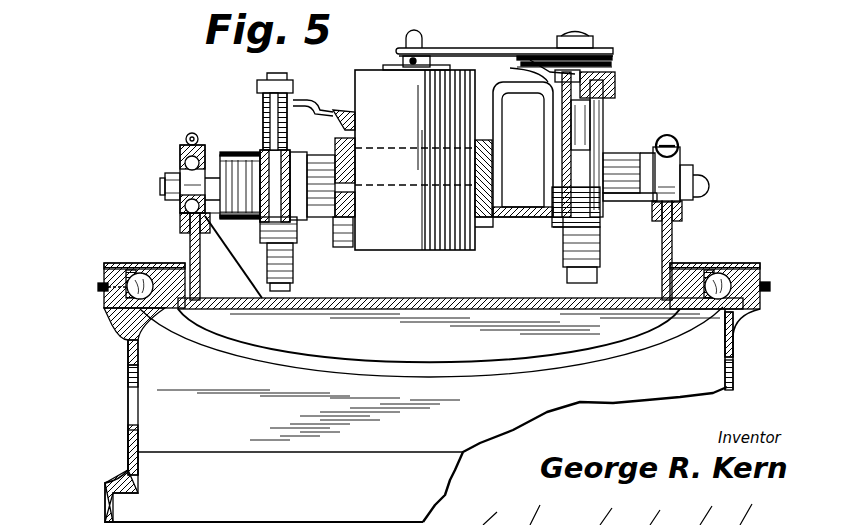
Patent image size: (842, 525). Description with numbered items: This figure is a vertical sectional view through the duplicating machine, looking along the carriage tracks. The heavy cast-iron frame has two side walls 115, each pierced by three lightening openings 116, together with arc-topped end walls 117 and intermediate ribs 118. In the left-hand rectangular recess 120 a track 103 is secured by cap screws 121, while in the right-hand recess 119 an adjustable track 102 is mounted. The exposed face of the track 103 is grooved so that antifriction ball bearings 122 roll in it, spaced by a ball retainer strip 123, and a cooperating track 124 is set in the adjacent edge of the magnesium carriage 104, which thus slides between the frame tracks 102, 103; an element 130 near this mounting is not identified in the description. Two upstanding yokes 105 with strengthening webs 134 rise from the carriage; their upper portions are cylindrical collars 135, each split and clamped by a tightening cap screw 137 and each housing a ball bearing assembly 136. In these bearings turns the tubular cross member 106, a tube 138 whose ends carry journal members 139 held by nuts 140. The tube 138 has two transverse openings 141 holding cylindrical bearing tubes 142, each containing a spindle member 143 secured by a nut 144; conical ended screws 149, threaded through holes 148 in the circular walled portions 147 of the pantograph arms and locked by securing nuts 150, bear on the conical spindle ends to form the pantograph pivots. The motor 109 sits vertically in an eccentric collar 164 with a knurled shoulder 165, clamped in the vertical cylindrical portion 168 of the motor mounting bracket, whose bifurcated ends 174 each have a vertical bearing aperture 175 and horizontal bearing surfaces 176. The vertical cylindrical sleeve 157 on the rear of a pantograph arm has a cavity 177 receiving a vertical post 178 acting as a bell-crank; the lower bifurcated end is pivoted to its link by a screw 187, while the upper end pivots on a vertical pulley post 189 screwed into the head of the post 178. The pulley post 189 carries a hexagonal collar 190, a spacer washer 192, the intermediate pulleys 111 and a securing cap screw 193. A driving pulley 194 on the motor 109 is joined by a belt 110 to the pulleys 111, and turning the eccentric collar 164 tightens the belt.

The track 102 is at (745, 314).
The track 103 is at (120, 328).
The carriage 104 is at (367, 298).
The upstanding yokes 105 is at (190, 232).
The tubular cross member 106 is at (343, 236).
The motor 109 is at (370, 58).
The belt 110 is at (473, 48).
The intermediate pulleys 111 is at (618, 58).
The side walls 115 is at (128, 437).
The lightening openings 116 is at (128, 402).
The end walls 117 is at (645, 4).
The intermediate ribs 118 is at (265, 452).
The rectangular recess 119 is at (770, 290).
The rectangular recess 120 is at (104, 272).
The cap screws 121 is at (100, 290).
The antifriction ball bearings 122 is at (185, 314).
The ball retainer strip 123 is at (148, 273).
The track 124 is at (168, 275).
The bearing ring 130 is at (124, 263).
The strengthening web portions 134 is at (234, 232).
The cylindrical collars 135 is at (688, 162).
The ball bearing assembly 136 is at (178, 170).
The tightening cap screw 137 is at (675, 138).
The tube 138 is at (222, 150).
The journal members 139 is at (203, 146).
The nuts 140 is at (702, 175).
The transverse openings 141 is at (340, 192).
The cylindrical bearing tubes 142 is at (250, 140).
The spindle member 143 is at (258, 148).
The securing nut 144 is at (297, 228).
The circular walled portion 147 is at (300, 106).
The threaded holes 148 is at (293, 84).
The conical ended screws 149 is at (225, 240).
The securing nuts 150 is at (262, 285).
The vertical cylindrical sleeve 157 is at (604, 125).
The eccentric collar 164 is at (362, 186).
The horizontally extending shoulder 165 is at (356, 118).
The vertical cylindrical portion 168 is at (362, 150).
The bifurcated ends 174 is at (540, 96).
The vertical bearing aperture 175 is at (545, 110).
The horizontal bearing surfaces 176 is at (548, 118).
The vertical cylindrical cavity 177 is at (618, 168).
The vertical post 178 is at (590, 128).
The screw 187 is at (563, 245).
The vertical pulley post 189 is at (618, 78).
The horizontally extending collar 190 is at (508, 70).
The cylindrical spacer member 192 is at (556, 47).
The securing cap screw 193 is at (578, 34).
The driving pulley 194 is at (402, 48).